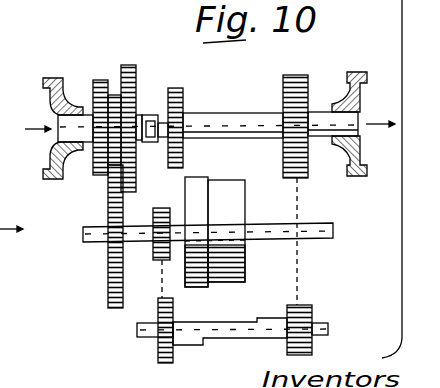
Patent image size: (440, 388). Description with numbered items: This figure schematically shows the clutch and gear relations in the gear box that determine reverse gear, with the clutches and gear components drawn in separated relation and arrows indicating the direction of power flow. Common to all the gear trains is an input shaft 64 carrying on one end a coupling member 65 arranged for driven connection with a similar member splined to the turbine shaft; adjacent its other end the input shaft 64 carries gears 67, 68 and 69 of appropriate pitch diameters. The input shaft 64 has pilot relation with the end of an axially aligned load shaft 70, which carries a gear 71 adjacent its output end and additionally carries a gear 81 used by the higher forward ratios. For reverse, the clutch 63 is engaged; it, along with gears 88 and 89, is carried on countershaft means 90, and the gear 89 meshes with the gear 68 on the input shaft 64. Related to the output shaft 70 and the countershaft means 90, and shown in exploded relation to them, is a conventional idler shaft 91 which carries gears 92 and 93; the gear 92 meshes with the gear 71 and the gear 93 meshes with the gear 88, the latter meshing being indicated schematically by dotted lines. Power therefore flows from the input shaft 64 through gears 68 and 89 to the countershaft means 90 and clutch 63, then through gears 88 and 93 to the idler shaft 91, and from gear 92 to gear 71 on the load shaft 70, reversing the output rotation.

The clutch 63 is at (225, 243).
The input shaft 64 is at (79, 147).
The coupling member 65 is at (47, 78).
The gear 67 is at (96, 81).
The gear 68 is at (111, 96).
The gear 69 is at (128, 66).
The load shaft 70 is at (200, 113).
The gear 71 is at (298, 76).
The gear 81 is at (175, 88).
The gear 88 is at (158, 208).
The gear 89 is at (108, 287).
The countershaft means 90 is at (327, 228).
The idler shaft 91 is at (329, 328).
The gear 92 is at (305, 304).
The gear 93 is at (164, 362).